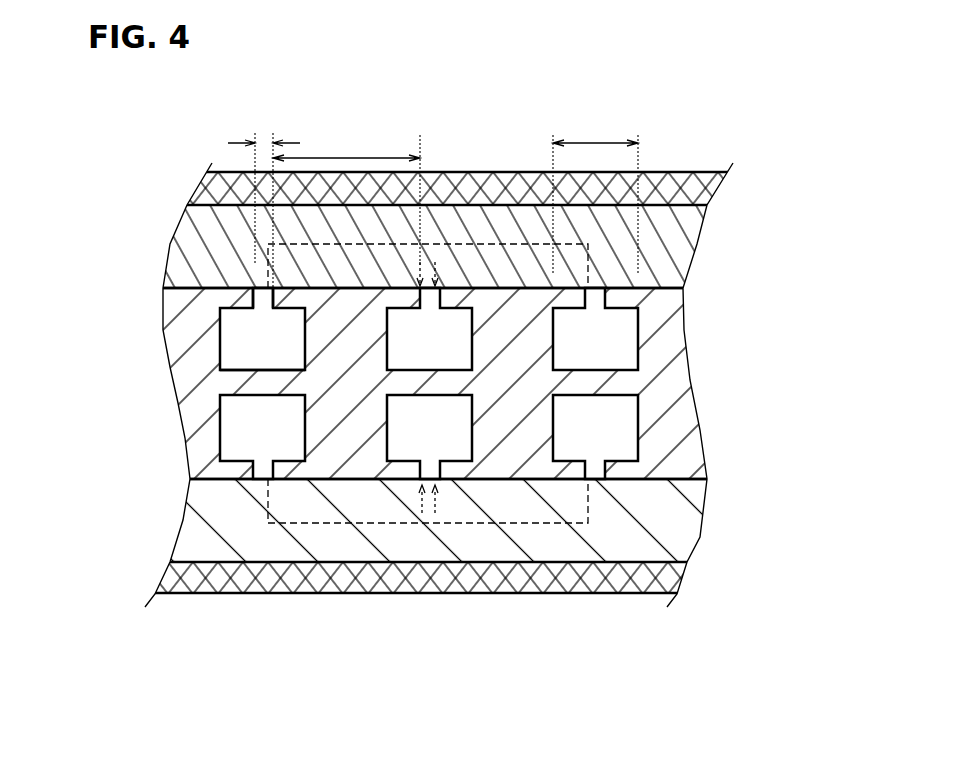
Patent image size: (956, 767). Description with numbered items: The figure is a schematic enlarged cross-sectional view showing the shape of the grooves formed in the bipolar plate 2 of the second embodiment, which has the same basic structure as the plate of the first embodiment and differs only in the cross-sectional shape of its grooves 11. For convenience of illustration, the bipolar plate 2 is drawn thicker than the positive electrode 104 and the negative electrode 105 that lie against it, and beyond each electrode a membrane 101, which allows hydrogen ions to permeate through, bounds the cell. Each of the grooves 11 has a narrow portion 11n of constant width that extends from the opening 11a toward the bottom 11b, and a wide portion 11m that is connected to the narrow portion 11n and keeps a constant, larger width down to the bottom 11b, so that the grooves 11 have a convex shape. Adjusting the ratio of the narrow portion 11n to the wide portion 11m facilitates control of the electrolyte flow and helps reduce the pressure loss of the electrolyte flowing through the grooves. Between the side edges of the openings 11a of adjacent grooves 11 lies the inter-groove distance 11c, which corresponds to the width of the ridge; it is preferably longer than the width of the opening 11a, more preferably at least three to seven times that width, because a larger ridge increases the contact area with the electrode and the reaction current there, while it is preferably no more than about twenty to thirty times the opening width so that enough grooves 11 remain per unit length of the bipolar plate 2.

The bipolar plate 2 is at (680, 370).
The grooves 11 is at (222, 338).
The opening 11a is at (257, 287).
The bottom 11b is at (243, 371).
The inter-groove distance 11c is at (346, 195).
The narrow portion 11n is at (264, 198).
The wide portion 11m is at (595, 191).
The membrane 101 is at (712, 190).
The positive electrode 104 is at (187, 520).
The negative electrode 105 is at (688, 262).